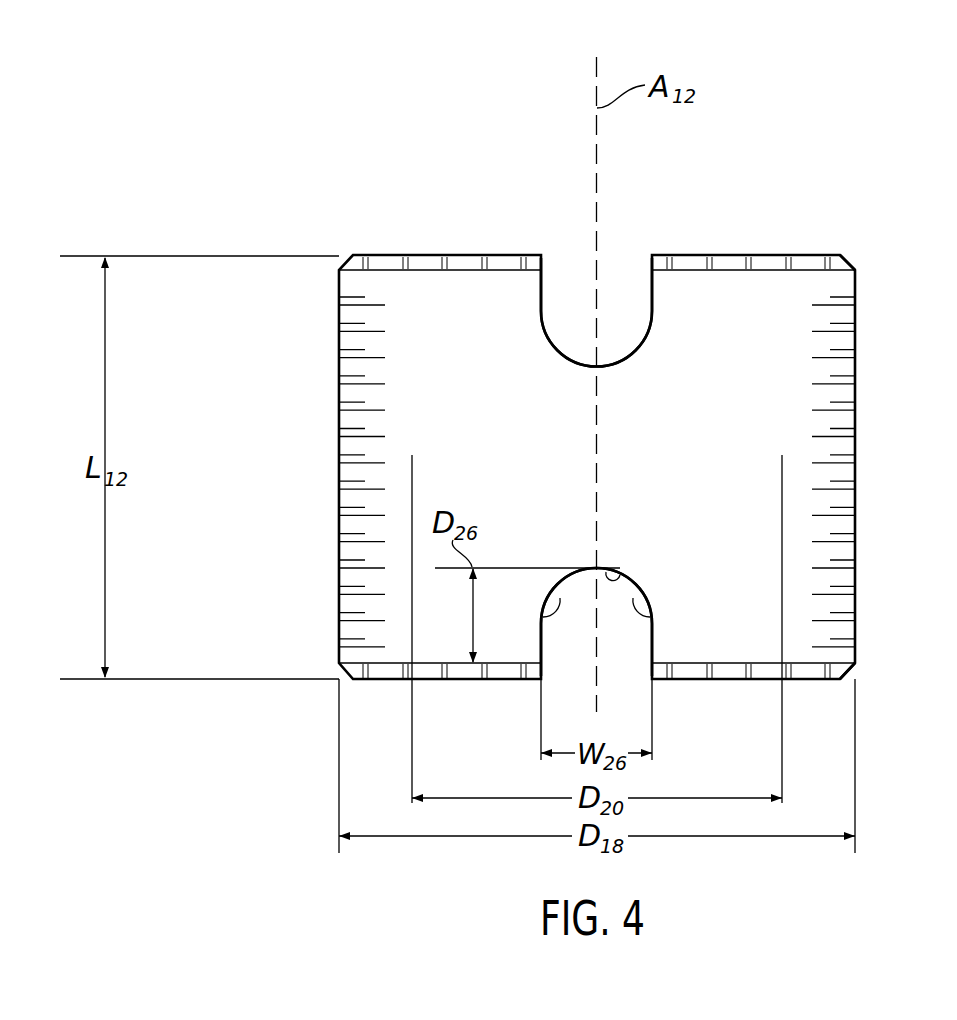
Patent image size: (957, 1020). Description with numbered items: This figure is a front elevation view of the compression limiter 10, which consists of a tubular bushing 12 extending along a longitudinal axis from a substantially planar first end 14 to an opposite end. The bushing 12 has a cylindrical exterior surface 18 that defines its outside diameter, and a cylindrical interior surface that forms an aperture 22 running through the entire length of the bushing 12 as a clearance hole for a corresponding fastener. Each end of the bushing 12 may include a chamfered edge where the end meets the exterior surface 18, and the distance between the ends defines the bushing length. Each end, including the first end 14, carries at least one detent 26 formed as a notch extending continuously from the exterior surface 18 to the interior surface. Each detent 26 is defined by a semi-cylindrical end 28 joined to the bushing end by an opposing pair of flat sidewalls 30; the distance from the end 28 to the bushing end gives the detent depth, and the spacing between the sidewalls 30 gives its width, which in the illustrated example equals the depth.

The compression limiter 10 is at (290, 114).
The tubular bushing 12 is at (330, 400).
The first end 14 is at (416, 256).
The cylindrical exterior surface 18 is at (339, 570).
The aperture 22 is at (850, 256).
The detent 26 is at (563, 290).
The semi-cylindrical end 28 is at (620, 577).
The flat sidewalls 30 is at (557, 592).